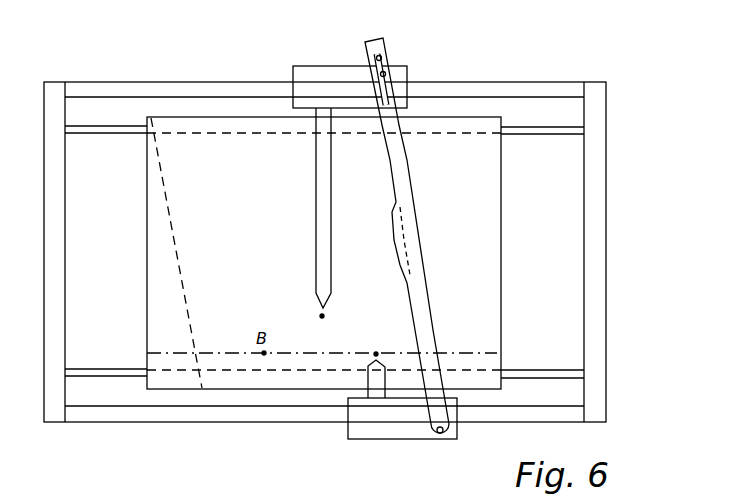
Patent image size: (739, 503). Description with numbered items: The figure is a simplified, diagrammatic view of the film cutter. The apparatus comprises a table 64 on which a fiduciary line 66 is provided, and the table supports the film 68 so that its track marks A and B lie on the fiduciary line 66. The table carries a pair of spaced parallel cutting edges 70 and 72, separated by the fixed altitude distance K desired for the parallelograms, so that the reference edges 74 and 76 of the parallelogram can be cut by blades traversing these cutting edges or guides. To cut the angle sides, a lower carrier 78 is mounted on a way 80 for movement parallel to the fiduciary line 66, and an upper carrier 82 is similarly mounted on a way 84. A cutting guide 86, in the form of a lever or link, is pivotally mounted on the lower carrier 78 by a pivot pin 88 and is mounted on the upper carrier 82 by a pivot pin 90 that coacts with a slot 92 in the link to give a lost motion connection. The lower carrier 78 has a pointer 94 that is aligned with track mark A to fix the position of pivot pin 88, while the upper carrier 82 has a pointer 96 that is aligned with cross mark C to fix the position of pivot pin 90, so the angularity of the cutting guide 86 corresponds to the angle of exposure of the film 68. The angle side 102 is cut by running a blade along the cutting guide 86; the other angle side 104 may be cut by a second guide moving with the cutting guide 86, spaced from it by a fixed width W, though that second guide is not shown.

The table 64 is at (570, 196).
The fiduciary line 66 is at (462, 353).
The film 68 is at (501, 277).
The cutting edge 70 is at (120, 130).
The cutting edge 72 is at (116, 342).
The reference edge 74 is at (222, 368).
The reference edge 76 is at (240, 134).
The lower carrier 78 is at (392, 440).
The way 80 is at (324, 430).
The upper carrier 82 is at (322, 66).
The way 84 is at (152, 84).
The cutting guide 86 is at (393, 170).
The pivot pin 88 is at (441, 437).
The pivot pin 90 is at (386, 74).
The slot 92 is at (381, 58).
The pointer 94 is at (369, 358).
The pointer 96 is at (316, 303).
The angle side 102 is at (404, 255).
The angle side 104 is at (173, 237).